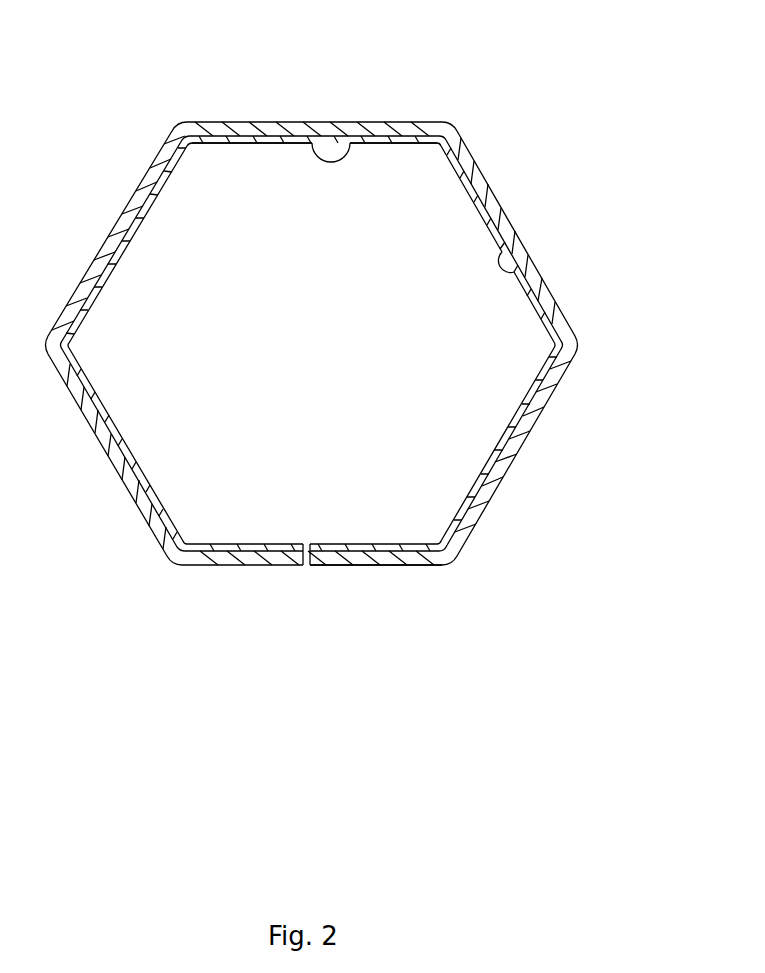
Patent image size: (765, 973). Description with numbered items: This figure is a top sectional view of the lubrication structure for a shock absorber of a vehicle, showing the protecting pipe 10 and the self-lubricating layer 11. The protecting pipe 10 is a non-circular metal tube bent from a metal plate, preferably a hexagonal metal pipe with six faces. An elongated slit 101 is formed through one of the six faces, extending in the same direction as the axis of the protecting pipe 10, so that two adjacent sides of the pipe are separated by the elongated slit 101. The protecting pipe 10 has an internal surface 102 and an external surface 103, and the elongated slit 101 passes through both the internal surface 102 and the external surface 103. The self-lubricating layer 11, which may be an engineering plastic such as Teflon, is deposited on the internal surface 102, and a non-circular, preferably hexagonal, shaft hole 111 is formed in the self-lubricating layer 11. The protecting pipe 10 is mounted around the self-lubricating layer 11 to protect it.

The protecting pipe 10 is at (566, 479).
The self-lubricating layer 11 is at (257, 178).
The shaft hole 111 is at (350, 143).
The elongated slit 101 is at (304, 565).
The internal surface 102 is at (502, 275).
The external surface 103 is at (370, 565).